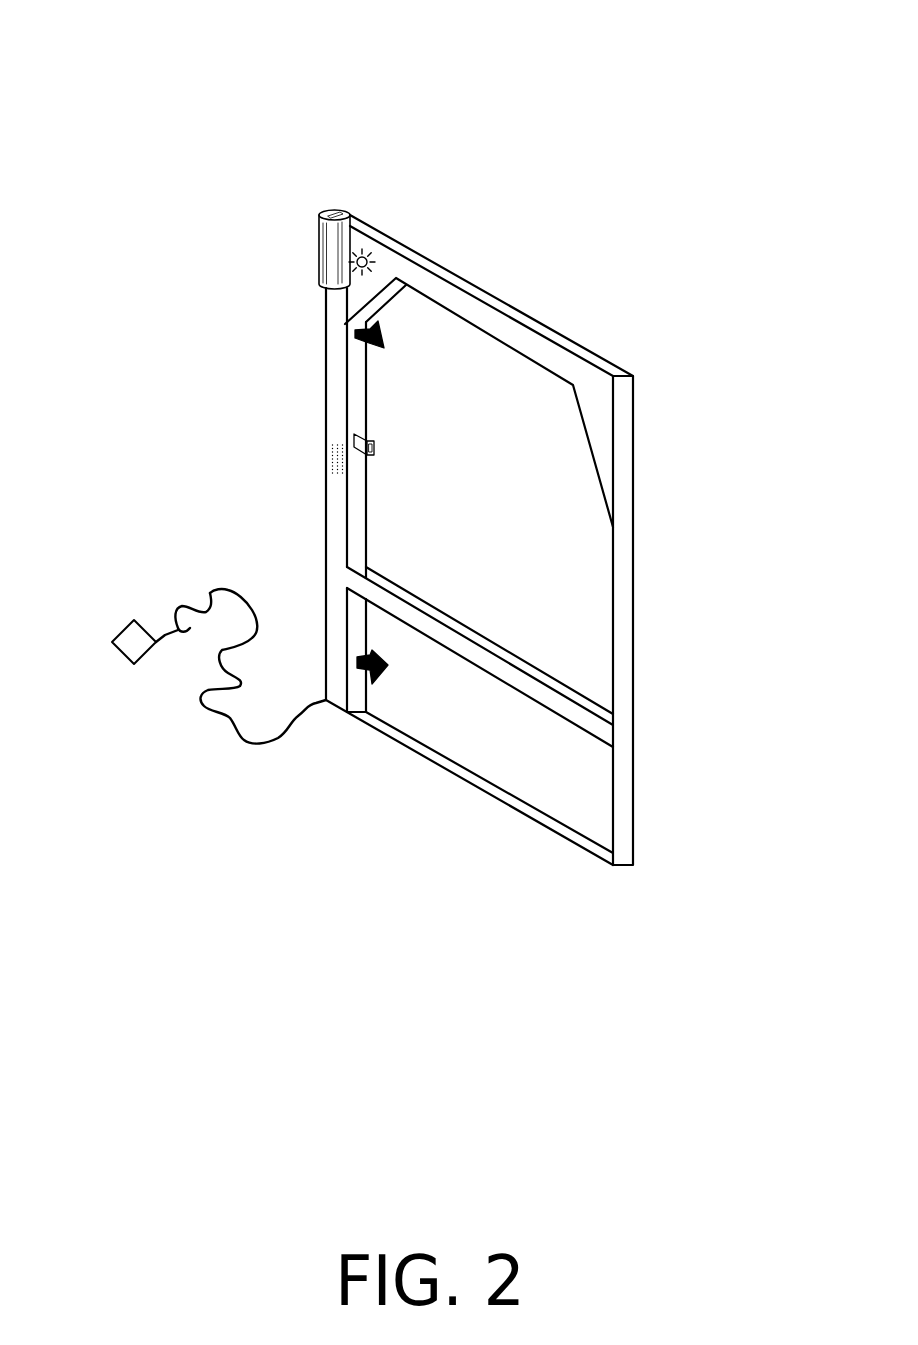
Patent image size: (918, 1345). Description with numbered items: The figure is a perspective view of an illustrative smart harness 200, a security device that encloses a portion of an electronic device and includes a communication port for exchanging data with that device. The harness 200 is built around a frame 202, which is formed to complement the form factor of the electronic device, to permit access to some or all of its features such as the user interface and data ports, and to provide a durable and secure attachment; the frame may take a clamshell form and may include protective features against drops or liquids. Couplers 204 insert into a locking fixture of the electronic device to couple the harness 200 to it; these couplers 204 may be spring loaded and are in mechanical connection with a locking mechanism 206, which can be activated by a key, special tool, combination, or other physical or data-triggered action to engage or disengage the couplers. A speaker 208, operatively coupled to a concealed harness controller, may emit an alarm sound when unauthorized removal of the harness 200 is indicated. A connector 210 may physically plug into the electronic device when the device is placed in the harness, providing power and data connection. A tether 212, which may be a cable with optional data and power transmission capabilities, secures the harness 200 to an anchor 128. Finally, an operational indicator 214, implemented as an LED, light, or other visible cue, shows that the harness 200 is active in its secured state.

The smart harness 200 is at (205, 57).
The frame 202 is at (615, 417).
The couplers 204 is at (355, 333).
The locking mechanism 206 is at (337, 213).
The speaker 208 is at (328, 448).
The connector 210 is at (356, 434).
The tether 212 is at (210, 593).
The operational indicator 214 is at (367, 256).
The anchor 128 is at (122, 658).